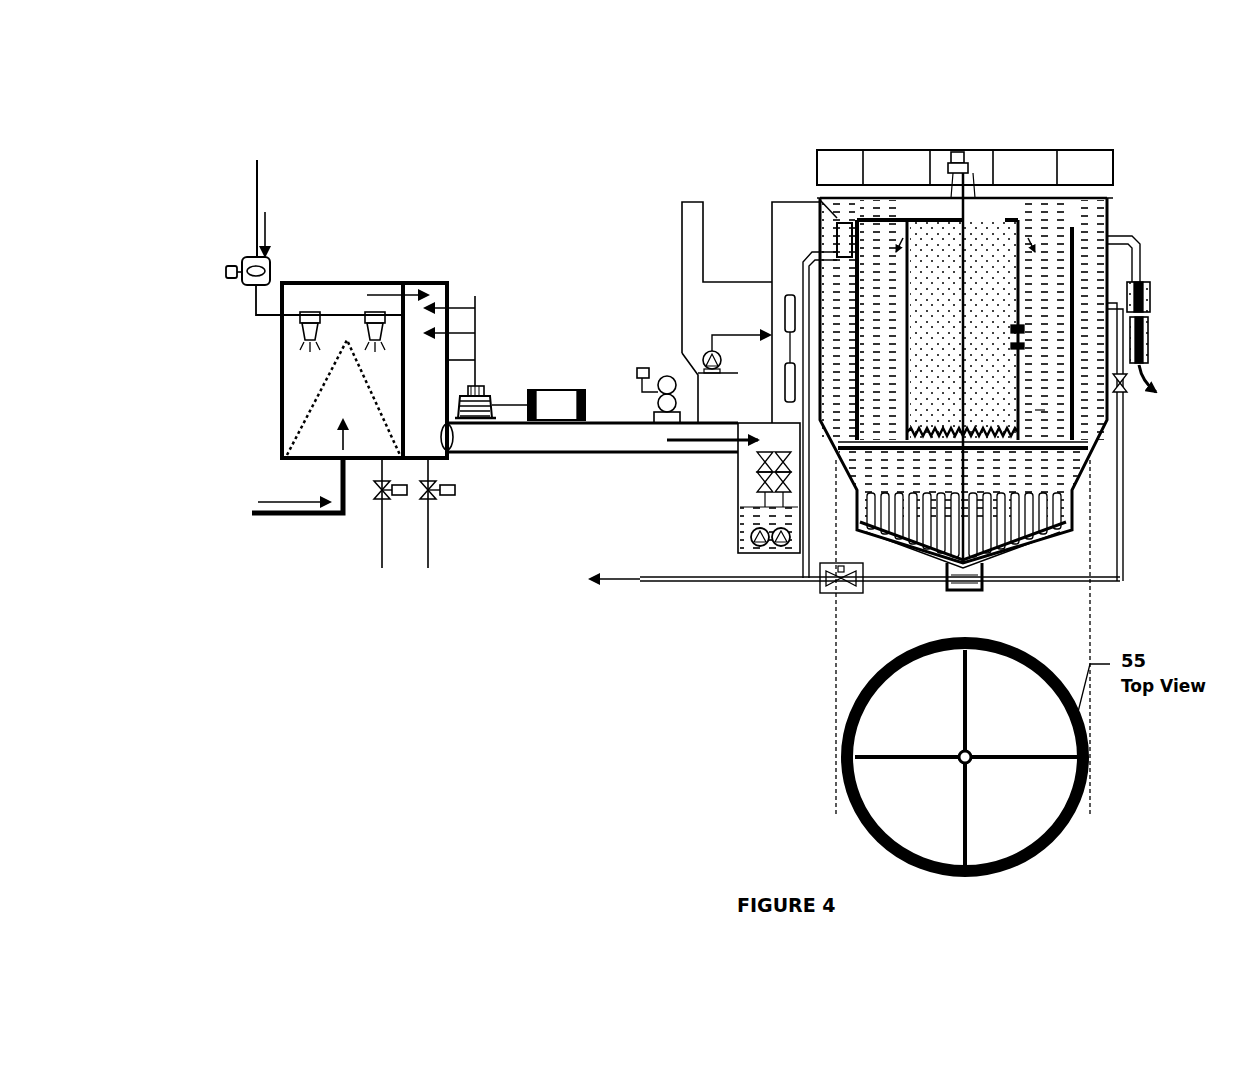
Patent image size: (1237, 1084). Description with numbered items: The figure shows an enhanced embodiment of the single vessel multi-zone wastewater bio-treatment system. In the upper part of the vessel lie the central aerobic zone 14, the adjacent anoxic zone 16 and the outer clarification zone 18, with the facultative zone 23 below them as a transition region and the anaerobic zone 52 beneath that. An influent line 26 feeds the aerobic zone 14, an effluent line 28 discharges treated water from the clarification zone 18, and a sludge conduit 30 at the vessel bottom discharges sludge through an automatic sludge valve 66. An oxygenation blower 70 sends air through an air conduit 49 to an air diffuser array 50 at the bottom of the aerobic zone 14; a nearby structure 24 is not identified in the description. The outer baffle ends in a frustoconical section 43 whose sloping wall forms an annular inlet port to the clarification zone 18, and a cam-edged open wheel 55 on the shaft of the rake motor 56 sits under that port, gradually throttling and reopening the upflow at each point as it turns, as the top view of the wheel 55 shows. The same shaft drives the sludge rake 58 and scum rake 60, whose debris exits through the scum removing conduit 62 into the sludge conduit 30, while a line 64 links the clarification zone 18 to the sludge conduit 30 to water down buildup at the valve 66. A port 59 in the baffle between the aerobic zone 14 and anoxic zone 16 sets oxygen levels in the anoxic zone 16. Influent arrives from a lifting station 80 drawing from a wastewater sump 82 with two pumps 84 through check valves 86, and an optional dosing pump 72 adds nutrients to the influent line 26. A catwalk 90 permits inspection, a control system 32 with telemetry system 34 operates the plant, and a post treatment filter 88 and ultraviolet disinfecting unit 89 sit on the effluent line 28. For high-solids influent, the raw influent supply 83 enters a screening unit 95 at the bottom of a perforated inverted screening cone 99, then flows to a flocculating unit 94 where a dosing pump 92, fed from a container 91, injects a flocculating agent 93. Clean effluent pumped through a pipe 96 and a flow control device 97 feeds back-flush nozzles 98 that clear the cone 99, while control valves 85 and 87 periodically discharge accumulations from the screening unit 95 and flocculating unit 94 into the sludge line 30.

The aerobic zone 14 is at (995, 238).
The anoxic zone 16 is at (1045, 290).
The clarification zone 18 is at (1095, 265).
The facultative zone 23 is at (1093, 463).
The enclosure line 24 is at (772, 268).
The influent line 26 is at (636, 425).
The effluent line 28 is at (1142, 267).
The sludge conduit 30 is at (727, 582).
The control system 32 is at (787, 310).
The telemetry system 34 is at (787, 383).
The frustoconical section 43 is at (1110, 438).
The air conduit 49 is at (682, 223).
The air diffuser array 50 is at (1035, 410).
The anaerobic zone 52 is at (983, 570).
The wheel 55 is at (1048, 506).
The rake motor 56 is at (951, 154).
The sludge rake 58 is at (1018, 557).
The port 59 is at (959, 222).
The scum rake 60 is at (840, 225).
The scum removing conduit 62 is at (803, 258).
The line 64 is at (1123, 528).
The automatic sludge valve 66 is at (835, 601).
The oxygenation blower 70 is at (665, 372).
The dosing pump 72 is at (730, 331).
The lifting station 80 is at (738, 483).
The wastewater sump 82 is at (742, 530).
The pumps 84 is at (778, 553).
The check valves 86 is at (734, 485).
The post treatment filter 88 is at (1150, 297).
The disinfecting unit 89 is at (1148, 340).
The catwalk 90 is at (1028, 148).
The container 91 is at (581, 354).
The dosing pump 92 is at (508, 356).
The flocculating agent 93 is at (476, 296).
The flocculating unit 94 is at (432, 283).
The screening unit 95 is at (364, 320).
The pipe 96 is at (262, 178).
The flow control device 97 is at (270, 257).
The nozzle 98 is at (292, 340).
The screening cone 99 is at (302, 418).
The raw influent supply 83 is at (303, 518).
The control valve 85 is at (382, 500).
The control valve 87 is at (436, 500).